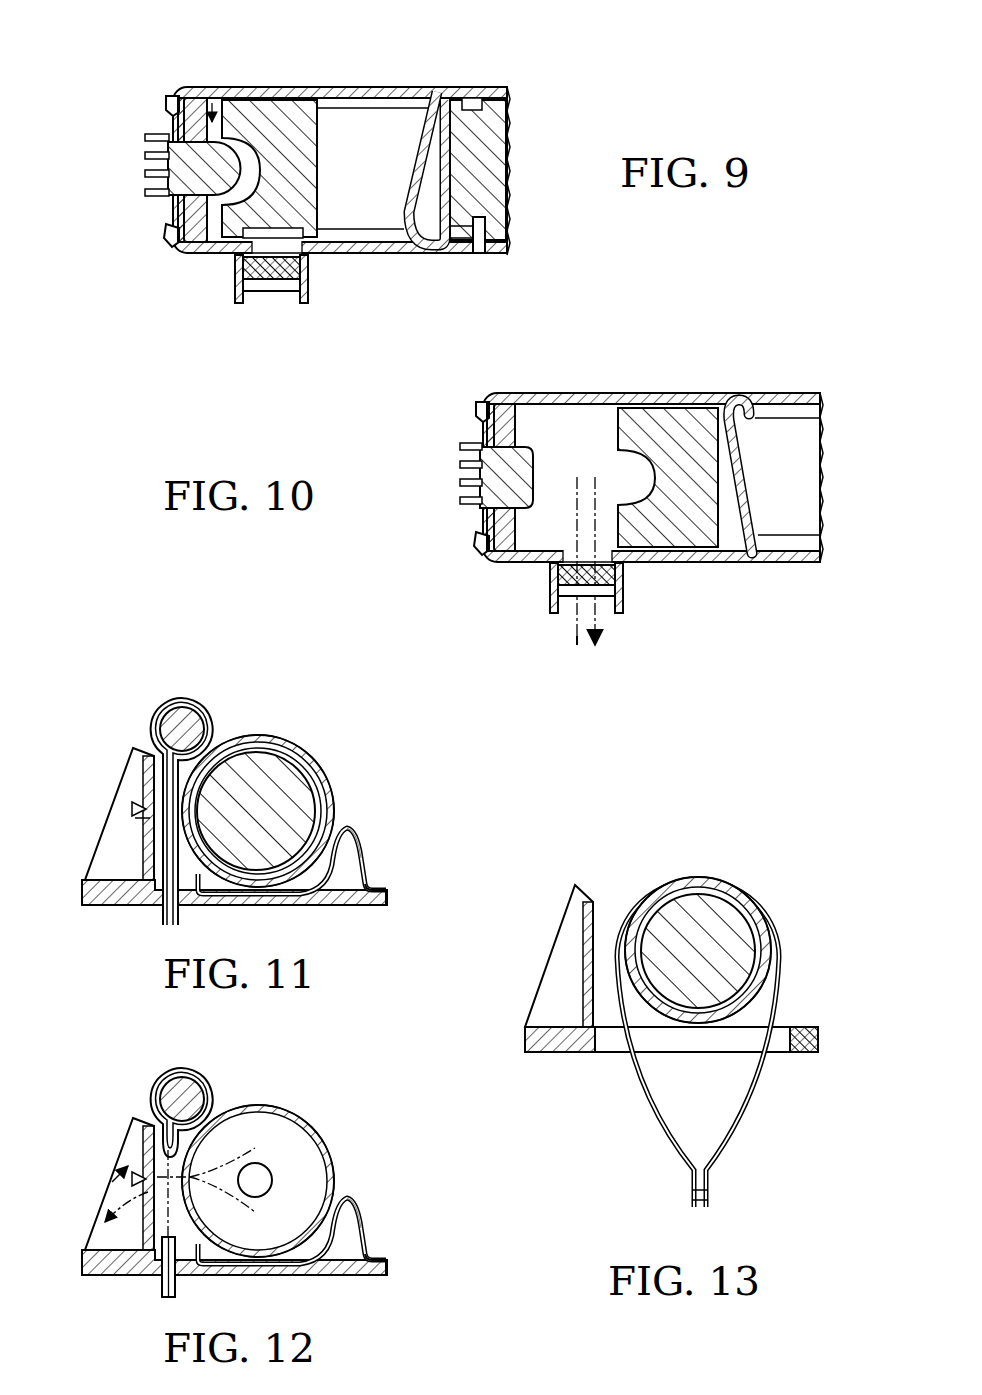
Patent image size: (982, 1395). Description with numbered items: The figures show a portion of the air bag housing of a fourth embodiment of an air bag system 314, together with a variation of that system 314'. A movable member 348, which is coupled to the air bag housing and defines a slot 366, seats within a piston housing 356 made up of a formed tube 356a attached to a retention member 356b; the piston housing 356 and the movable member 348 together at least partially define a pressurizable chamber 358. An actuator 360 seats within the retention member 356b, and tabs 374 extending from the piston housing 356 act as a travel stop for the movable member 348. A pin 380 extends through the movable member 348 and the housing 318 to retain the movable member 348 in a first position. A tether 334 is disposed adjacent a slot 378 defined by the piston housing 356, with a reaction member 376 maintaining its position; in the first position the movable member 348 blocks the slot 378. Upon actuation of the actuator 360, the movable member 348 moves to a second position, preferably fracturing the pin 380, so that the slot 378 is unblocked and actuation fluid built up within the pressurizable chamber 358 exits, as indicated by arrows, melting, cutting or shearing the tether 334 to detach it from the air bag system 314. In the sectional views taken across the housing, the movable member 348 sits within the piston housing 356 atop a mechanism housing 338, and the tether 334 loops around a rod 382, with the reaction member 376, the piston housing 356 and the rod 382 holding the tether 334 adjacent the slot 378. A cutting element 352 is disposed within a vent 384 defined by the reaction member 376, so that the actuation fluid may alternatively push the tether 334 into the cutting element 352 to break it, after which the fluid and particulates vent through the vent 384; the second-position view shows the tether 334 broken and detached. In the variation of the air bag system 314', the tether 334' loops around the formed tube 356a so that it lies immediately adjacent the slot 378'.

In FIG. 9, the air bag system 314 is at (341, 142).
In FIG. 10, the air bag system 314 is at (667, 468).
In FIG. 11, the air bag system 314 is at (255, 790).
In FIG. 12, the air bag system 314 is at (271, 1154).
In FIG. 13, the air bag system 314' is at (710, 967).
In FIG. 12, the housing 318 is at (370, 1276).
In FIG. 9, the tether 334 is at (317, 277).
In FIG. 10, the tether 334 is at (540, 617).
In FIG. 11, the tether 334 is at (159, 789).
In FIG. 12, the tether 334 is at (128, 1183).
In FIG. 13, the tether 334' is at (651, 919).
In FIG. 11, the mechanism housing 338 is at (372, 872).
In FIG. 12, the mechanism housing 338 is at (373, 1242).
In FIG. 9, the movable member 348 is at (280, 100).
In FIG. 10, the movable member 348 is at (680, 408).
In FIG. 11, the movable member 348 is at (325, 790).
In FIG. 11, the cutting element 352 is at (135, 806).
In FIG. 12, the cutting element 352 is at (133, 1178).
In FIG. 9, the piston housing 356 is at (242, 88).
In FIG. 10, the piston housing 356 is at (522, 398).
In FIG. 11, the piston housing 356 is at (340, 795).
In FIG. 12, the piston housing 356 is at (332, 1163).
In FIG. 13, the piston housing 356 is at (755, 897).
In FIG. 9, the formed tube 356a is at (222, 97).
In FIG. 10, the formed tube 356a is at (568, 394).
In FIG. 11, the formed tube 356a is at (354, 843).
In FIG. 12, the formed tube 356a is at (354, 1213).
In FIG. 9, the retention member 356b is at (170, 100).
In FIG. 10, the retention member 356b is at (478, 408).
In FIG. 9, the pressurizable chamber 358 is at (205, 98).
In FIG. 10, the pressurizable chamber 358 is at (546, 528).
In FIG. 9, the actuator 360 is at (152, 175).
In FIG. 10, the actuator 360 is at (464, 485).
In FIG. 12, the actuator 360 is at (265, 1180).
In FIG. 9, the slot 366 is at (320, 163).
In FIG. 10, the slot 366 is at (790, 540).
In FIG. 9, the tabs 374 is at (408, 140).
In FIG. 10, the tabs 374 is at (755, 500).
In FIG. 9, the reaction member 376 is at (240, 300).
In FIG. 10, the reaction member 376 is at (625, 614).
In FIG. 11, the reaction member 376 is at (133, 752).
In FIG. 12, the reaction member 376 is at (133, 1122).
In FIG. 9, the slot 378 is at (231, 281).
In FIG. 10, the slot 378 is at (547, 591).
In FIG. 11, the slot 378 is at (283, 802).
In FIG. 12, the slot 378 is at (258, 1169).
In FIG. 13, the slot 378' is at (698, 922).
In FIG. 9, the pin 380 is at (480, 254).
In FIG. 11, the rod 382 is at (238, 745).
In FIG. 12, the rod 382 is at (238, 1115).
In FIG. 9, the vent 384 is at (285, 292).
In FIG. 10, the vent 384 is at (605, 600).
In FIG. 11, the vent 384 is at (145, 822).
In FIG. 12, the vent 384 is at (100, 1228).